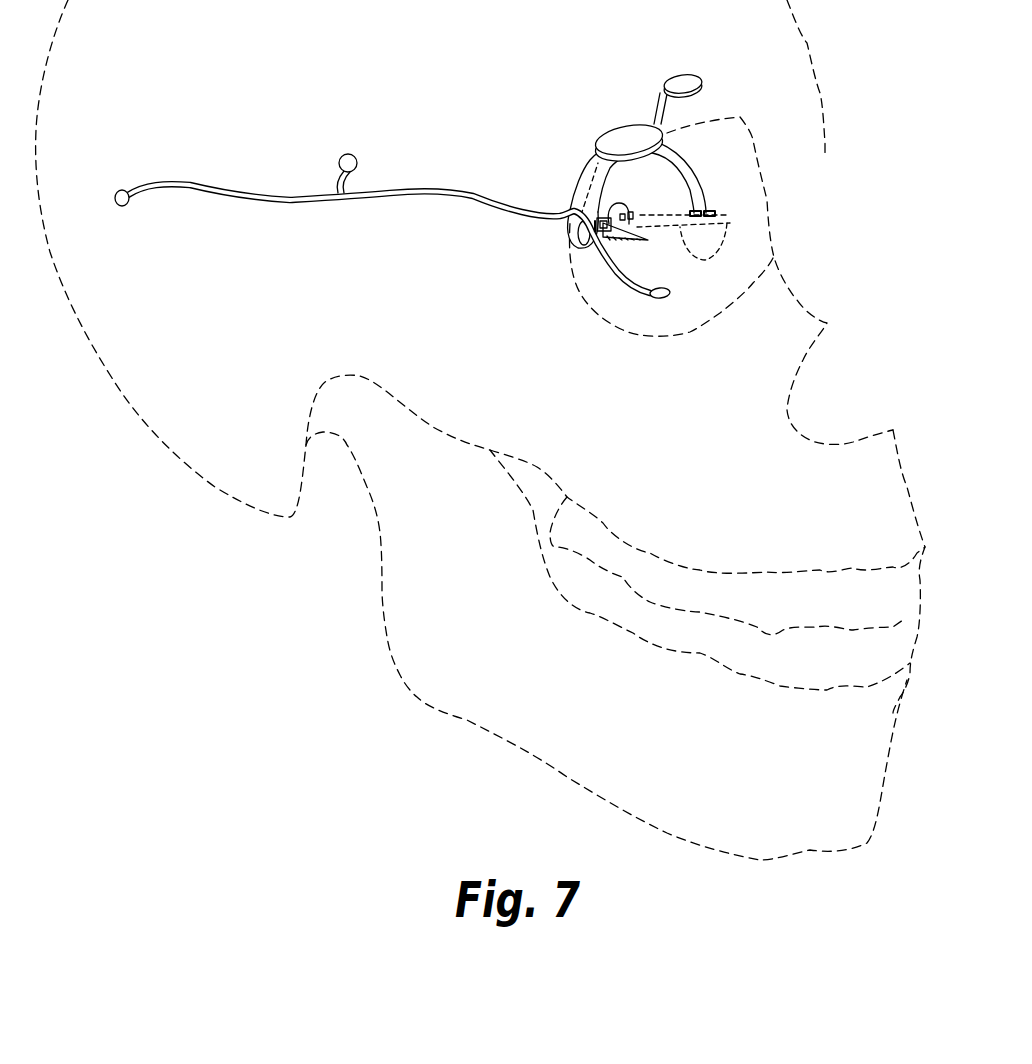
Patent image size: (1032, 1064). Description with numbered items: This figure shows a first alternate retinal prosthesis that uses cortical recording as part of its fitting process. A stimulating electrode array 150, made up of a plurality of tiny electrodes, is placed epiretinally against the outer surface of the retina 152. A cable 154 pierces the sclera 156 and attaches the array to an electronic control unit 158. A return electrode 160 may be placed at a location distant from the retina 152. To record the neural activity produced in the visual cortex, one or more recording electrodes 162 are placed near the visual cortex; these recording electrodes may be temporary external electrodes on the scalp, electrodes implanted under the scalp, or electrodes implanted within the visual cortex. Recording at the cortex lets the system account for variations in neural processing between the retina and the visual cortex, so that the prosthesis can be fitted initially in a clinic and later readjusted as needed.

The stimulating electrode array 150 is at (626, 207).
The retina 152 is at (630, 193).
The cable 154 is at (577, 190).
The sclera 156 is at (656, 270).
The electronic control unit 158 is at (627, 122).
The return electrode 160 is at (681, 76).
The recording electrodes 162 is at (356, 157).